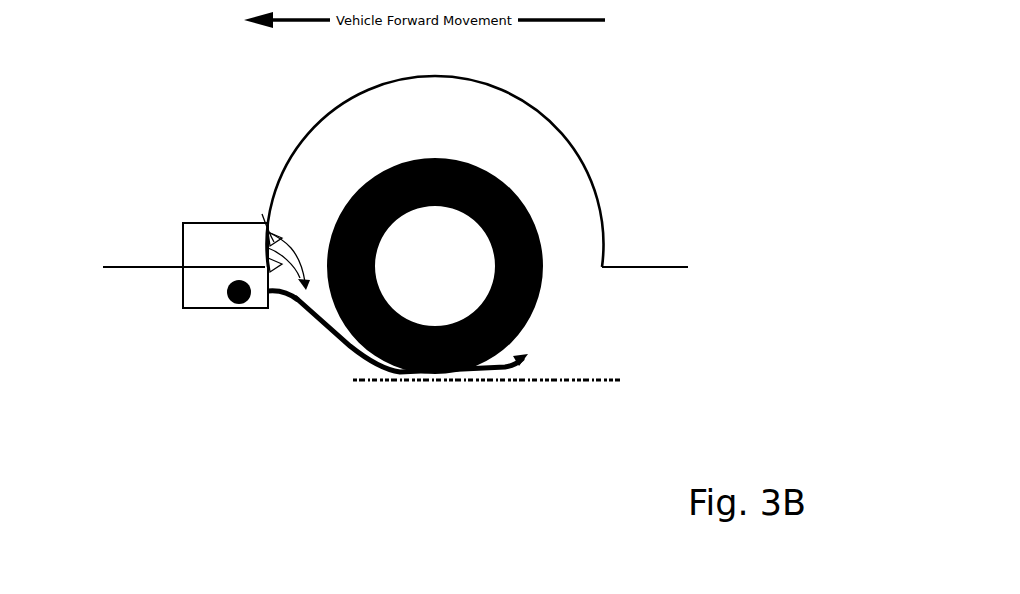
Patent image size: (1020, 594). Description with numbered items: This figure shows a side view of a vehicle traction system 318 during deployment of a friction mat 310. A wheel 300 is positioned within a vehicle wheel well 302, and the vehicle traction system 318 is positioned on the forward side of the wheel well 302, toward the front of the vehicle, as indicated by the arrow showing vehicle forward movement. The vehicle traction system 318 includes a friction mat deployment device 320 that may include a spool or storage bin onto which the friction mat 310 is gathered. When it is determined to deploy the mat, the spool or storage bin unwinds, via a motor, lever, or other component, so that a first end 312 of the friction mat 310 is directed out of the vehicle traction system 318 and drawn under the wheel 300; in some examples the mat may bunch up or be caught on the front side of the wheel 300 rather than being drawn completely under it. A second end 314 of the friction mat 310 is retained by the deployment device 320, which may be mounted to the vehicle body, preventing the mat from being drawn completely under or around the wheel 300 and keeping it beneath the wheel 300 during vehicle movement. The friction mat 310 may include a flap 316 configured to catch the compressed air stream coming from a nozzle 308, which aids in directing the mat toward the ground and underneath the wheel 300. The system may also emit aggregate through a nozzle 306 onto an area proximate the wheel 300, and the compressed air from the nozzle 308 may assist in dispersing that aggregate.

The wheel 300 is at (509, 185).
The vehicle wheel well 302 is at (590, 222).
The nozzle 306 is at (275, 252).
The nozzle 308 is at (272, 238).
The friction mat 310 is at (420, 381).
The first end 312 is at (518, 378).
The second end 314 is at (270, 303).
The flap 316 is at (530, 362).
The vehicle traction system 318 is at (197, 211).
The friction mat deployment device 320 is at (190, 292).